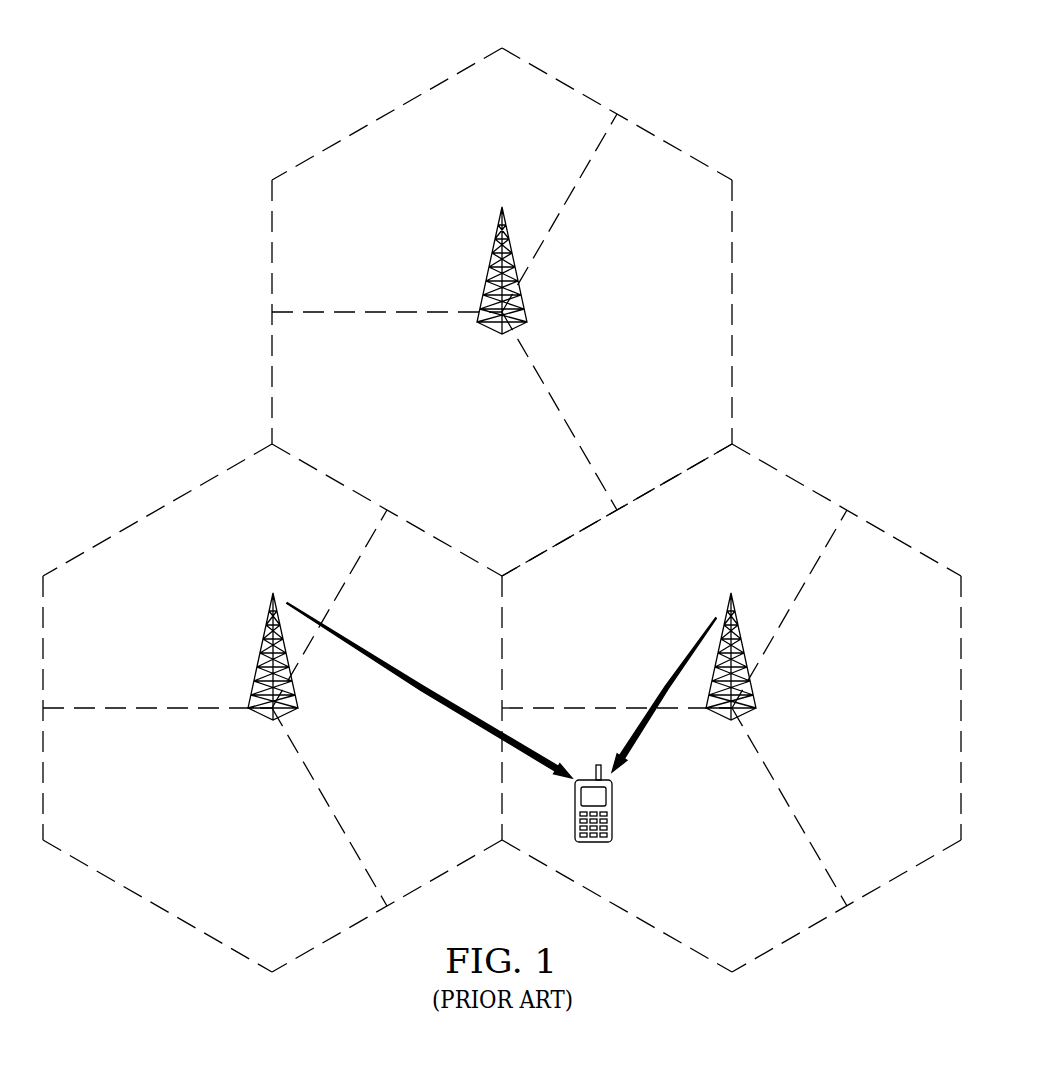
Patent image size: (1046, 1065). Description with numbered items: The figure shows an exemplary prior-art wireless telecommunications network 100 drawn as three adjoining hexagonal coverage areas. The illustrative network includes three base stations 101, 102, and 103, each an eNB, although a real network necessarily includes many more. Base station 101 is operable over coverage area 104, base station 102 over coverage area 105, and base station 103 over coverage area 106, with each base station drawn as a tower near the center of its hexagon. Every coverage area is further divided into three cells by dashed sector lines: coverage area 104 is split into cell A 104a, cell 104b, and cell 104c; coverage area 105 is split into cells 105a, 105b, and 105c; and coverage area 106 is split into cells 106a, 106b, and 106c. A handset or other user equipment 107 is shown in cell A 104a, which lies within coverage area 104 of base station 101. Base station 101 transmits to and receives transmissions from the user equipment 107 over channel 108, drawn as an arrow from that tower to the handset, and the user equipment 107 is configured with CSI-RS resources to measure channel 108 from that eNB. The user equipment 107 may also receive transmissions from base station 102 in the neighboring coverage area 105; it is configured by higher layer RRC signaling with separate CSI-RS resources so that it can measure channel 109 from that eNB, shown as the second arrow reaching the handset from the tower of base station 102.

The wireless telecommunications network 100 is at (278, 60).
The base station 101 is at (758, 690).
The base station 102 is at (258, 654).
The base station 103 is at (486, 268).
The coverage area 104 is at (807, 928).
The cell A 104a is at (723, 871).
The cell 104b is at (900, 721).
The cell 104c is at (691, 601).
The coverage area 105 is at (166, 911).
The cell 105a is at (231, 845).
The cell 105b is at (421, 795).
The cell 105c is at (233, 601).
The coverage area 106 is at (650, 132).
The cell 106a is at (458, 449).
The cell 106b is at (672, 327).
The cell 106c is at (462, 204).
The user equipment 107 is at (590, 781).
The channel 108 is at (680, 728).
The channel 109 is at (426, 686).